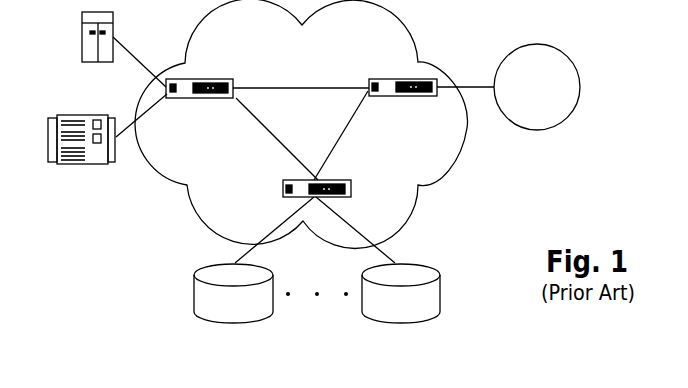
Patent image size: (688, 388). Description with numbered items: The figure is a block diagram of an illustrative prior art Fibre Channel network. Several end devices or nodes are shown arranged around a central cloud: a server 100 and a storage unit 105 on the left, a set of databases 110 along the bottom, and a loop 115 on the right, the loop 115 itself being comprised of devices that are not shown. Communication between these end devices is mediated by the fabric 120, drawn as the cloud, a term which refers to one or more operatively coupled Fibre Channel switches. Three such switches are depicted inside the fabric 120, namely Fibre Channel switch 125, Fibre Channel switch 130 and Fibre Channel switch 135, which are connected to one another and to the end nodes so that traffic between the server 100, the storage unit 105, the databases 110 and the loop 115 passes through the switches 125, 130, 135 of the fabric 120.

The server 100 is at (97, 49).
The storage unit 105 is at (81, 155).
The databases 110 is at (317, 304).
The loop 115 is at (519, 96).
The fabric 120 is at (321, 60).
The Fibre Channel switch 125 is at (199, 101).
The Fibre Channel switch 130 is at (403, 100).
The Fibre Channel switch 135 is at (337, 176).